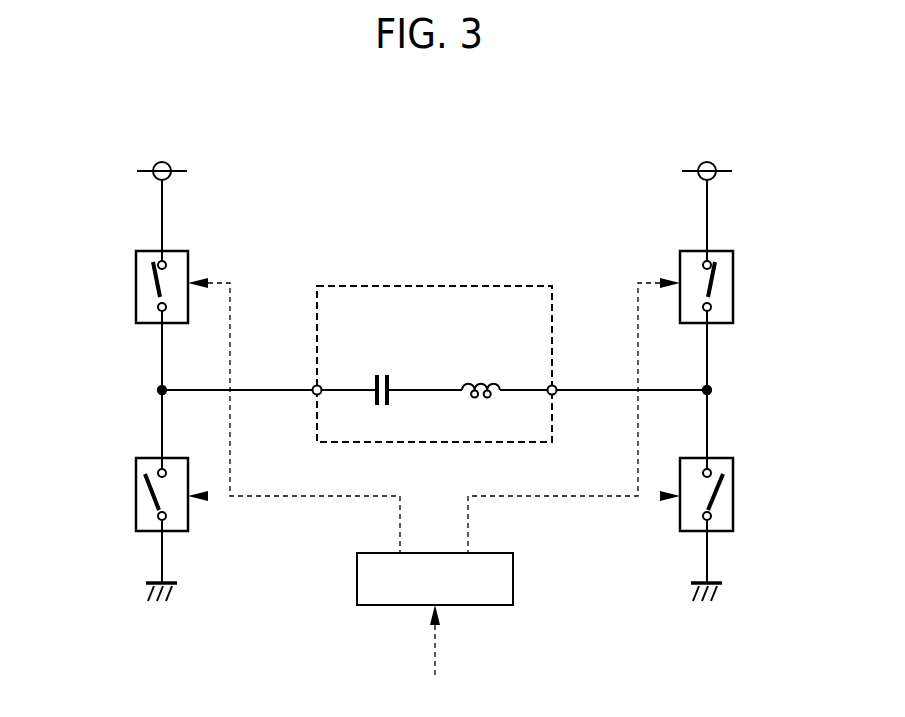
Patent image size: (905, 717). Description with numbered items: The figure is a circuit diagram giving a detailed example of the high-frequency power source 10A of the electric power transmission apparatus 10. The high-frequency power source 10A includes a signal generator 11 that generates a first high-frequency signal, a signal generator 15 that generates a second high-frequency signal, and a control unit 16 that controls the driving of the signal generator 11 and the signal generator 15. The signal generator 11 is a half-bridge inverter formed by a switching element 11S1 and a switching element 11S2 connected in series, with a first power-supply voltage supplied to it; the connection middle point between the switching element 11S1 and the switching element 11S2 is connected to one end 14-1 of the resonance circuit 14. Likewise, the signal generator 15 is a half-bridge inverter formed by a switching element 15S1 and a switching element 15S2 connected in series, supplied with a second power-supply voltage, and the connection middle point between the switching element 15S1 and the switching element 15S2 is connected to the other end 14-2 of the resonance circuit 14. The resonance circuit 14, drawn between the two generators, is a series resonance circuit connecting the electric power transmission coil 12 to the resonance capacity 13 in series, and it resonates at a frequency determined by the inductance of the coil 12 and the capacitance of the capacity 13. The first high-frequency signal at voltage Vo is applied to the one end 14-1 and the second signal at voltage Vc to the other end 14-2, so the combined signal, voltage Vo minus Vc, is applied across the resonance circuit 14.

The electric power transmission apparatus 10 is at (501, 191).
The high-frequency power source 10A is at (275, 590).
The signal generator 11 is at (79, 191).
The switching element 11S1 is at (136, 283).
The switching element 11S2 is at (136, 496).
The electric power transmission coil 12 is at (483, 383).
The resonance capacity 13 is at (385, 375).
The resonance circuit 14 is at (497, 286).
The one end 14-1 is at (314, 387).
The other end 14-2 is at (580, 372).
The signal generator 15 is at (781, 191).
The switching element 15S1 is at (757, 273).
The switching element 15S2 is at (757, 484).
The control unit 16 is at (513, 578).